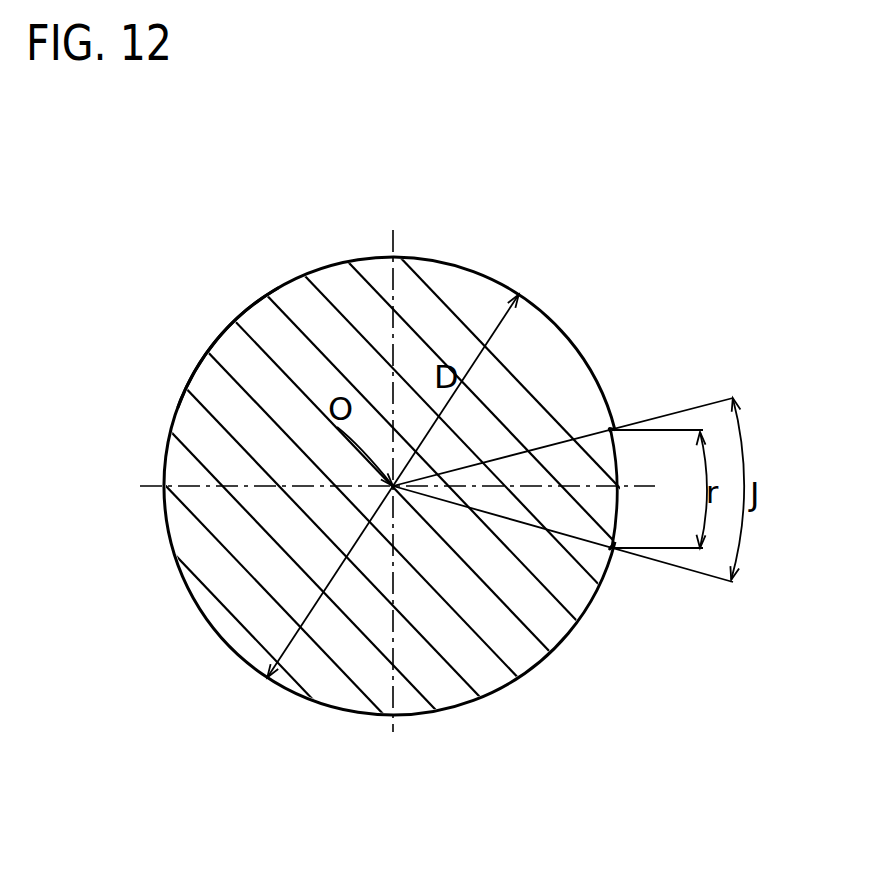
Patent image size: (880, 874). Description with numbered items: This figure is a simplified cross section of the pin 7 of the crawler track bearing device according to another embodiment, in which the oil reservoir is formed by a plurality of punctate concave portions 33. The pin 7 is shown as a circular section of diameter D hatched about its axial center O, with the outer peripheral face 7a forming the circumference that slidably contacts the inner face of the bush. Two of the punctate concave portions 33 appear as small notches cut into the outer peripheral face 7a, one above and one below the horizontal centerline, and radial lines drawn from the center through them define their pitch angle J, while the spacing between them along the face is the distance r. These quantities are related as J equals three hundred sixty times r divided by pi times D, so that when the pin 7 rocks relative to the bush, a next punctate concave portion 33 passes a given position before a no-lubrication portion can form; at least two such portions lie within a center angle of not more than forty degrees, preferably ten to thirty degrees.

The pin 7 is at (562, 320).
The outer peripheral face 7a is at (210, 348).
The punctate concave portion 33 is at (610, 426).